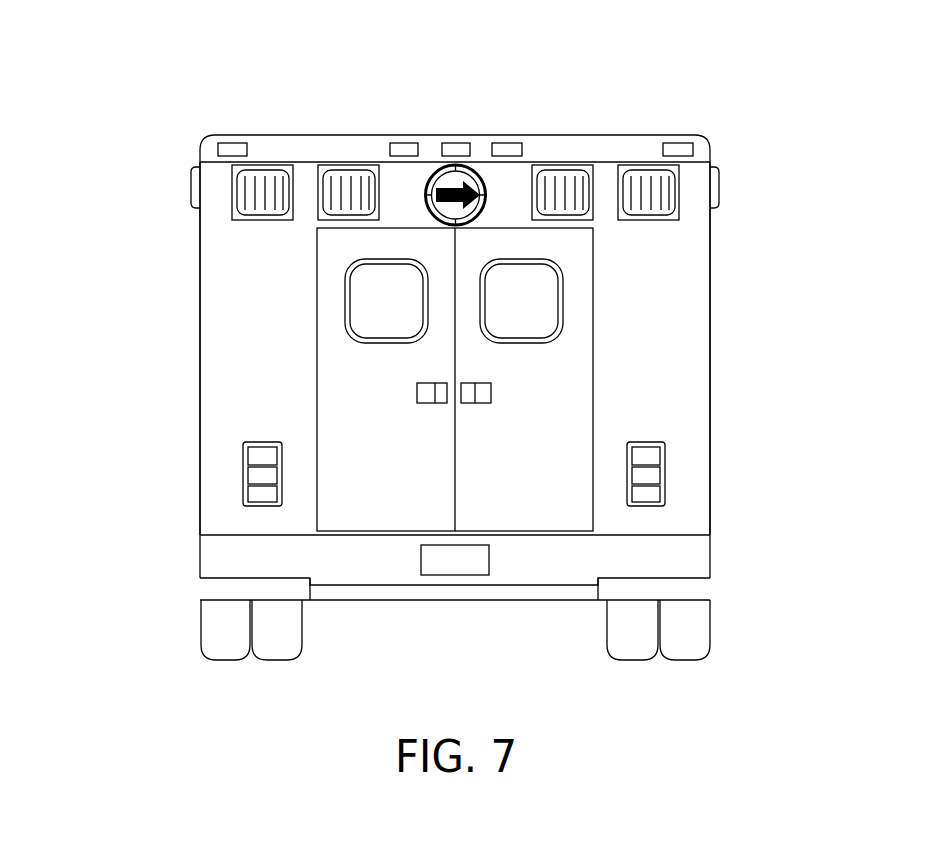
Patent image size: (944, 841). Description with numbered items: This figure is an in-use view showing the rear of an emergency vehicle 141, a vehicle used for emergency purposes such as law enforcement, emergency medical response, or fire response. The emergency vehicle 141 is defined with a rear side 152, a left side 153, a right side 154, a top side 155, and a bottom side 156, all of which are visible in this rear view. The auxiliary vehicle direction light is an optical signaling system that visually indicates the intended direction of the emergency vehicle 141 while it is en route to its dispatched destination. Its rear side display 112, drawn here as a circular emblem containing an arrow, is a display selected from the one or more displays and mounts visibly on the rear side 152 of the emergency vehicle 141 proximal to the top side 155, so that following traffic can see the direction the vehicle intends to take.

The emergency vehicle 141 is at (168, 91).
The top side 155 is at (372, 135).
The rear side display 112 is at (463, 167).
The rear side 152 is at (673, 355).
The left side 153 is at (200, 328).
The right side 154 is at (710, 322).
The bottom side 156 is at (365, 600).